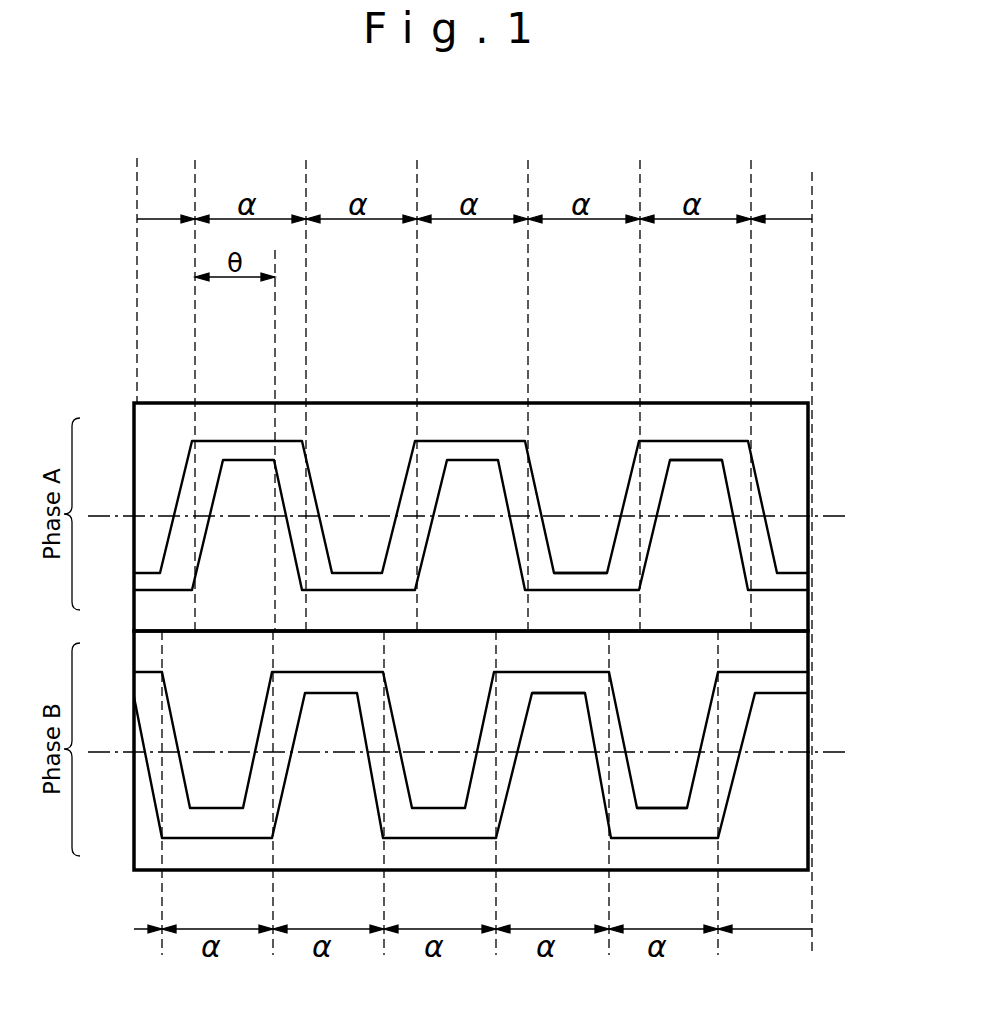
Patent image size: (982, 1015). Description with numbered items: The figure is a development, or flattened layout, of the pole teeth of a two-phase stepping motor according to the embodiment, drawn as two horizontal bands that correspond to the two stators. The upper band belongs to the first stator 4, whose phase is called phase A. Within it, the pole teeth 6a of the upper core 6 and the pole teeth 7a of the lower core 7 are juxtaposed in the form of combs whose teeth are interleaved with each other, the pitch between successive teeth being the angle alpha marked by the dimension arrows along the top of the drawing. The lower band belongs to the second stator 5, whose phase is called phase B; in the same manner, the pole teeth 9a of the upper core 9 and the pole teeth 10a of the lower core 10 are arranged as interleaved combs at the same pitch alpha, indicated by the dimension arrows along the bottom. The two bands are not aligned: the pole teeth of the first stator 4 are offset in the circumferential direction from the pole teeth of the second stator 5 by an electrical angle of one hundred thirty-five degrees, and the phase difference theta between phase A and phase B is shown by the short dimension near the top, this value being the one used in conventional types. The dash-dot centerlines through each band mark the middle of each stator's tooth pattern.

The first stator 4 is at (811, 499).
The second stator 5 is at (811, 756).
The upper core 6 is at (793, 443).
The pole teeth 6a is at (595, 537).
The lower core 7 is at (793, 612).
The pole teeth 7a is at (694, 478).
The upper core 9 is at (790, 654).
The pole teeth 9a is at (657, 788).
The lower core 10 is at (772, 853).
The pole teeth 10a is at (568, 708).